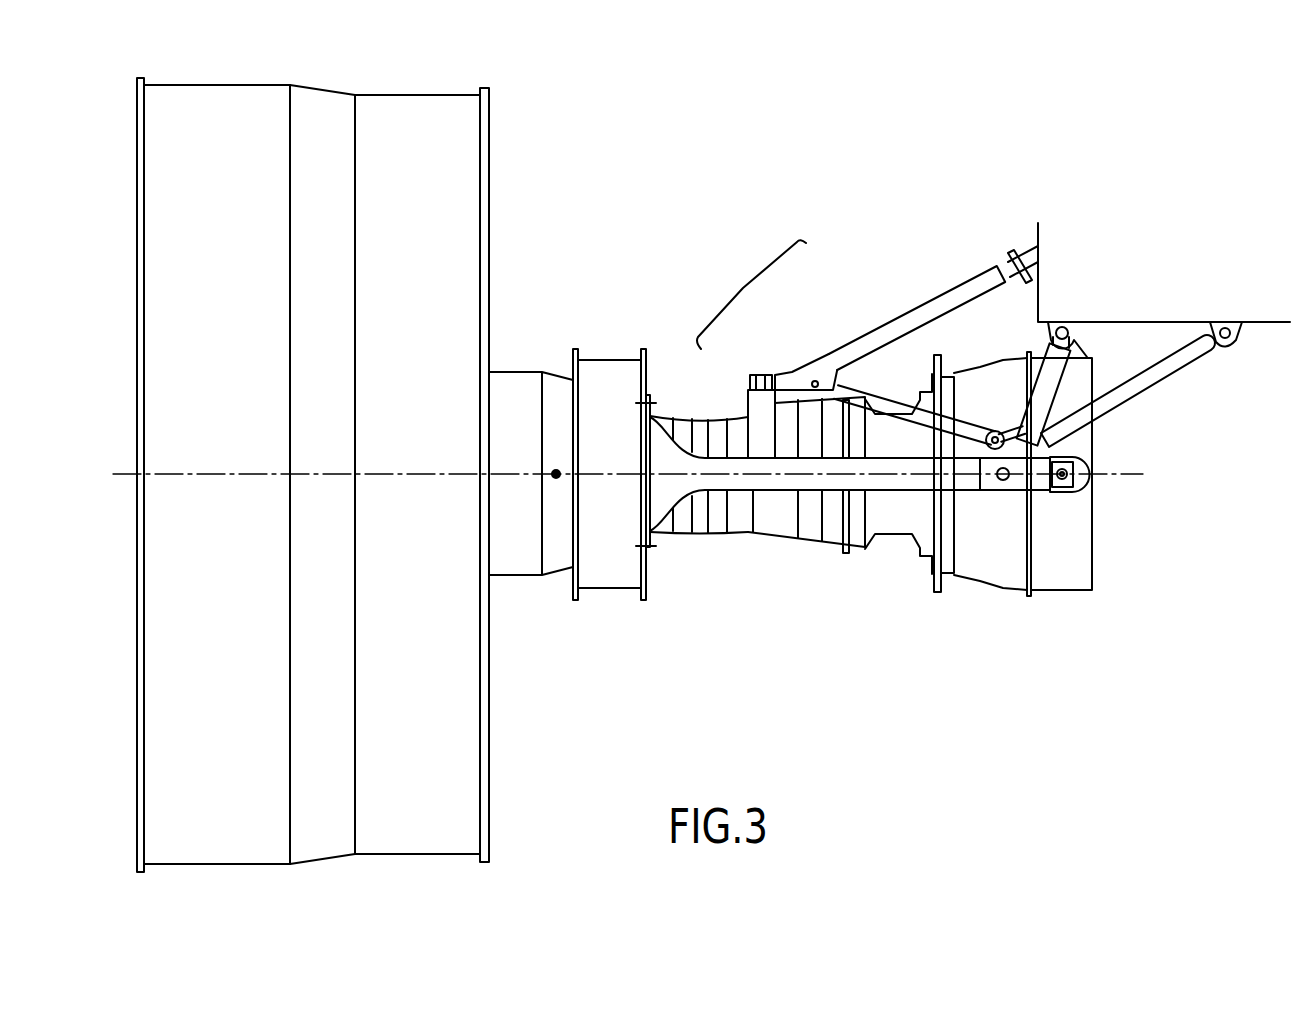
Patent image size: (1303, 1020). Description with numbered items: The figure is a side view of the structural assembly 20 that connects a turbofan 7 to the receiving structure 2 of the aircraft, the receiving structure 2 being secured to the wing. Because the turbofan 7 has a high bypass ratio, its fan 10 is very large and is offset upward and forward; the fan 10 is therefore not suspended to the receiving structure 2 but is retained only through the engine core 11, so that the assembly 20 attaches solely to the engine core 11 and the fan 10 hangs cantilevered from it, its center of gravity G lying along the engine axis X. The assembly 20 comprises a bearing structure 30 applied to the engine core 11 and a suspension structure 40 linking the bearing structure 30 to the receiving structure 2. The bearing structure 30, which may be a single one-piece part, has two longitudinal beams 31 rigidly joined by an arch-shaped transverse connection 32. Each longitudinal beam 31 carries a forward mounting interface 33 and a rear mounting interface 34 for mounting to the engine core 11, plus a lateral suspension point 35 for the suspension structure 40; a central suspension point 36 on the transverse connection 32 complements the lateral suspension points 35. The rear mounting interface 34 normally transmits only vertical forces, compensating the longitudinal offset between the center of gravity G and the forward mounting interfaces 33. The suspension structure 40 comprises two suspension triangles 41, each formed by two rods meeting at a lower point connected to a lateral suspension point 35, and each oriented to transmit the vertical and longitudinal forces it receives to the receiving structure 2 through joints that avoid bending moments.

The fan 10 is at (414, 107).
The turbofan 7 is at (600, 300).
The center of gravity G is at (556, 470).
The structural assembly 20 is at (743, 288).
The bearing structure 30 is at (740, 448).
The forward mounting interface 33 is at (682, 497).
The longitudinal beam 31 is at (778, 484).
The transverse connection 32 is at (765, 404).
The central suspension point 36 is at (752, 374).
The suspension structure 40 is at (875, 322).
The suspension triangle 41 is at (1057, 410).
The receiving structure 2 is at (1070, 277).
The engine core 11 is at (893, 533).
The rear mounting interface 34 is at (1073, 488).
The lateral suspension point 35 is at (1003, 482).
The axis X is at (640, 474).